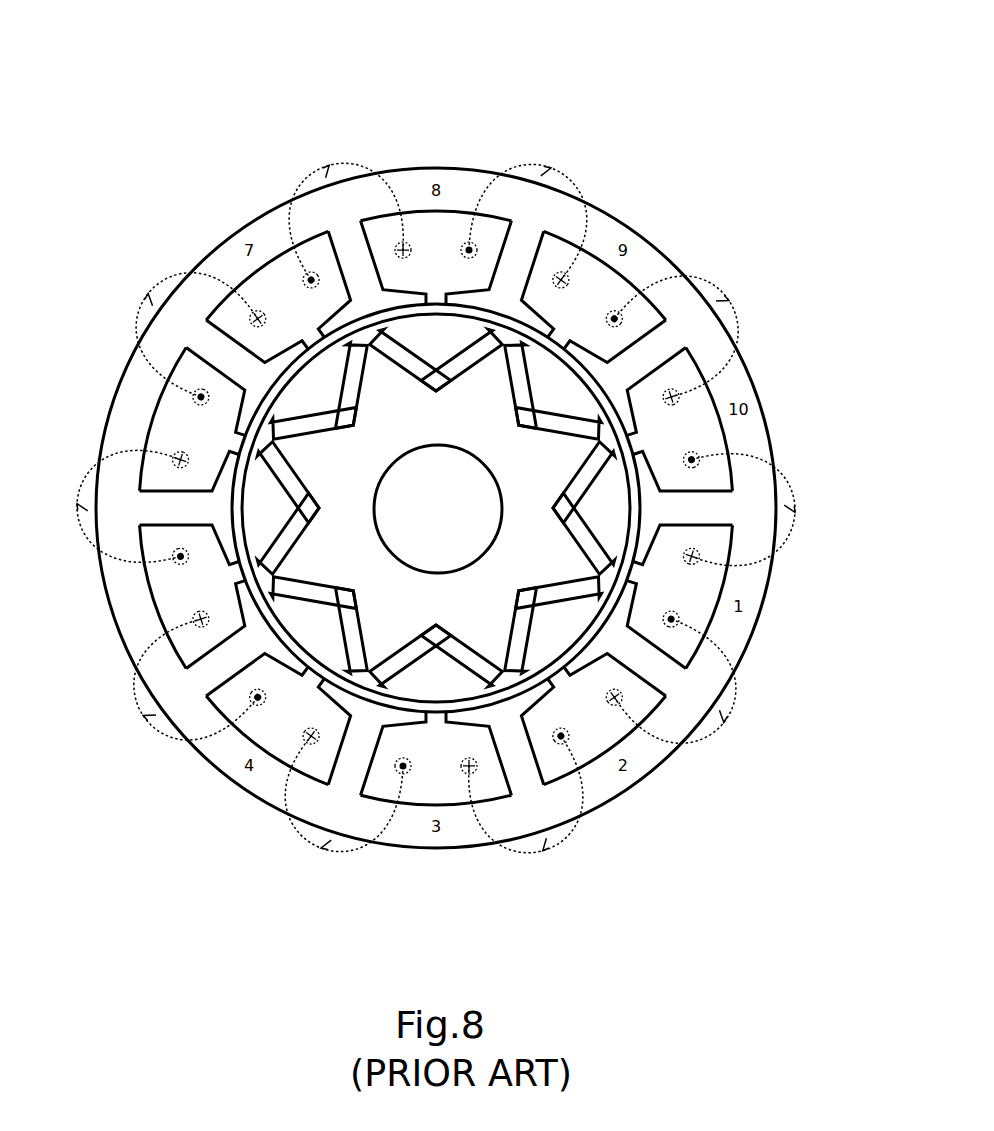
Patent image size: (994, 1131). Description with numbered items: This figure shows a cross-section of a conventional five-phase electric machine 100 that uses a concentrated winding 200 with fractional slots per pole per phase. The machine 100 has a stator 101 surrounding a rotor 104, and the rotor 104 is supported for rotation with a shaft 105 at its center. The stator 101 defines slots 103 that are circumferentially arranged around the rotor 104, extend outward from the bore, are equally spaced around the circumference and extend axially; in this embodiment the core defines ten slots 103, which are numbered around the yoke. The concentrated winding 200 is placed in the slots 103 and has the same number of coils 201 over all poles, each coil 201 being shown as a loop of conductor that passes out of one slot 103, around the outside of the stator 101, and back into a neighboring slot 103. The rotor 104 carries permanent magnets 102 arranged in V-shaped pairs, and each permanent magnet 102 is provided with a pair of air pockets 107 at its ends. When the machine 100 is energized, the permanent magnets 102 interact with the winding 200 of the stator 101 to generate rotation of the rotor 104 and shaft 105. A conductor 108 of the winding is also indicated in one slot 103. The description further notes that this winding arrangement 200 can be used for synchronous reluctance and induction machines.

The electric machine 100 is at (622, 85).
The stator 101 is at (455, 182).
The permanent magnets 102 is at (525, 383).
The slots 103 is at (720, 540).
The rotor 104 is at (563, 548).
The shaft 105 is at (478, 530).
The air pockets 107 is at (360, 677).
The coil conductor 108 is at (285, 286).
The winding 200 is at (284, 166).
The coils 201 is at (356, 170).